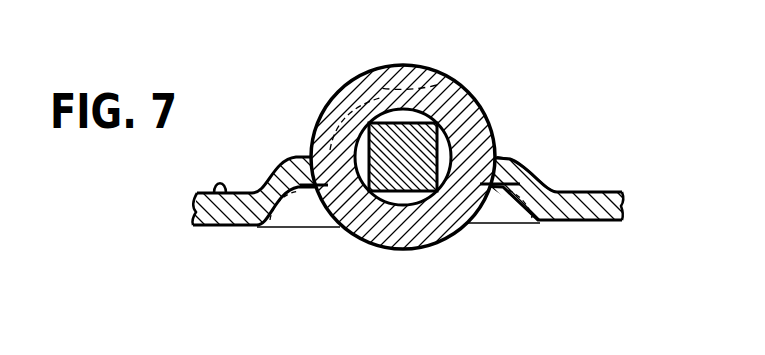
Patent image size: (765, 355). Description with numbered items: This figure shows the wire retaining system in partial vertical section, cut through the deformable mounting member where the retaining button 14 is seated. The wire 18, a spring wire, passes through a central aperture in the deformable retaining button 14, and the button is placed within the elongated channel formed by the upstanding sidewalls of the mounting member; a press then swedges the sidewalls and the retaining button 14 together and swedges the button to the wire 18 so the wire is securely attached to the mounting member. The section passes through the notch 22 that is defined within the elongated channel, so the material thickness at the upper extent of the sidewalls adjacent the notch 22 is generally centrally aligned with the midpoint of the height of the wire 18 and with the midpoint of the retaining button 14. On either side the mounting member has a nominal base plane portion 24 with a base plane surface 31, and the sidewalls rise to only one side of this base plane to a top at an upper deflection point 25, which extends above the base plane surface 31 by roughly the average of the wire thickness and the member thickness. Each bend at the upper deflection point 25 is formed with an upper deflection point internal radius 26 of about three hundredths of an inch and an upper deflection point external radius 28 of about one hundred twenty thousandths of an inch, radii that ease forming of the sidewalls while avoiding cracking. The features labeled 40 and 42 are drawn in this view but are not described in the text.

The retaining button 14 is at (316, 132).
The wire 18 is at (438, 158).
The notch 22 is at (323, 228).
The base plane portion 24 is at (593, 192).
The upper deflection point 25 is at (500, 160).
The upper deflection point internal radius 26 is at (503, 195).
The upper deflection point external radius 28 is at (503, 157).
The base plane surface 31 is at (197, 227).
The groove 40 is at (437, 85).
The lip 42 is at (367, 128).